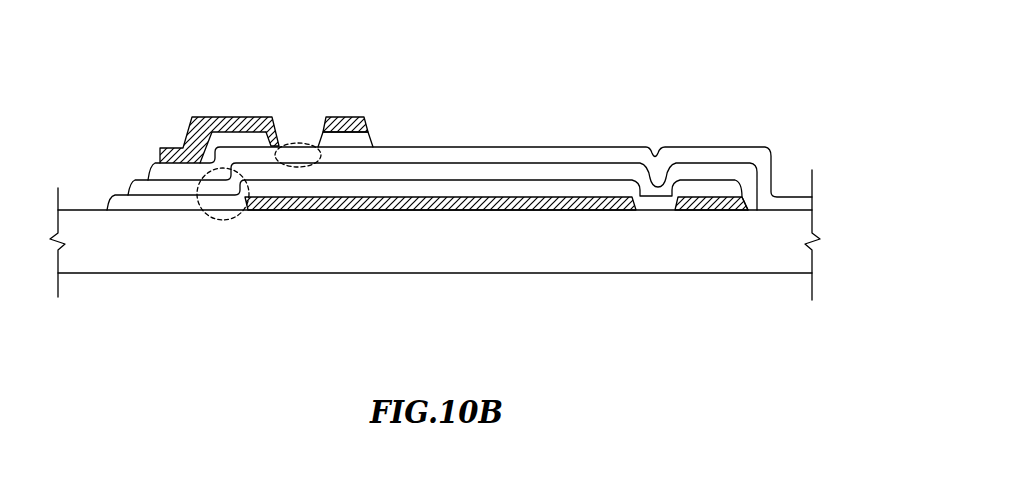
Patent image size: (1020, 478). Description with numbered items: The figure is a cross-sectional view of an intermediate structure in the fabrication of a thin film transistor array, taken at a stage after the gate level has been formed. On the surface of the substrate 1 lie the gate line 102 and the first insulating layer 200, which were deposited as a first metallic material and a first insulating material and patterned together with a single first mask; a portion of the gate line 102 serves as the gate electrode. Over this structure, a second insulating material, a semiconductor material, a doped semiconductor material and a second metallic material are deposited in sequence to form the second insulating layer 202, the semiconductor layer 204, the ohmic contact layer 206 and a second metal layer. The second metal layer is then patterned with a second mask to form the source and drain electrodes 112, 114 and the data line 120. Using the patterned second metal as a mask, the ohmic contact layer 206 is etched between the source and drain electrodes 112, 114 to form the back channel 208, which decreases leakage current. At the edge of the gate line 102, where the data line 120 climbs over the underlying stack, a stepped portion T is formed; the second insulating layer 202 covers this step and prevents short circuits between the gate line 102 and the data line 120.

The substrate 1 is at (285, 260).
The gate line 102 is at (590, 203).
The first insulating layer 200 is at (372, 188).
The second insulating layer 202 is at (468, 172).
The semiconductor layer 204 is at (550, 155).
The ohmic contact layer 206 is at (363, 138).
The source electrode 112 is at (240, 117).
The drain electrode 114 is at (345, 117).
The data line 120 is at (172, 147).
The back channel 208 is at (295, 143).
The stepped portion T is at (225, 220).